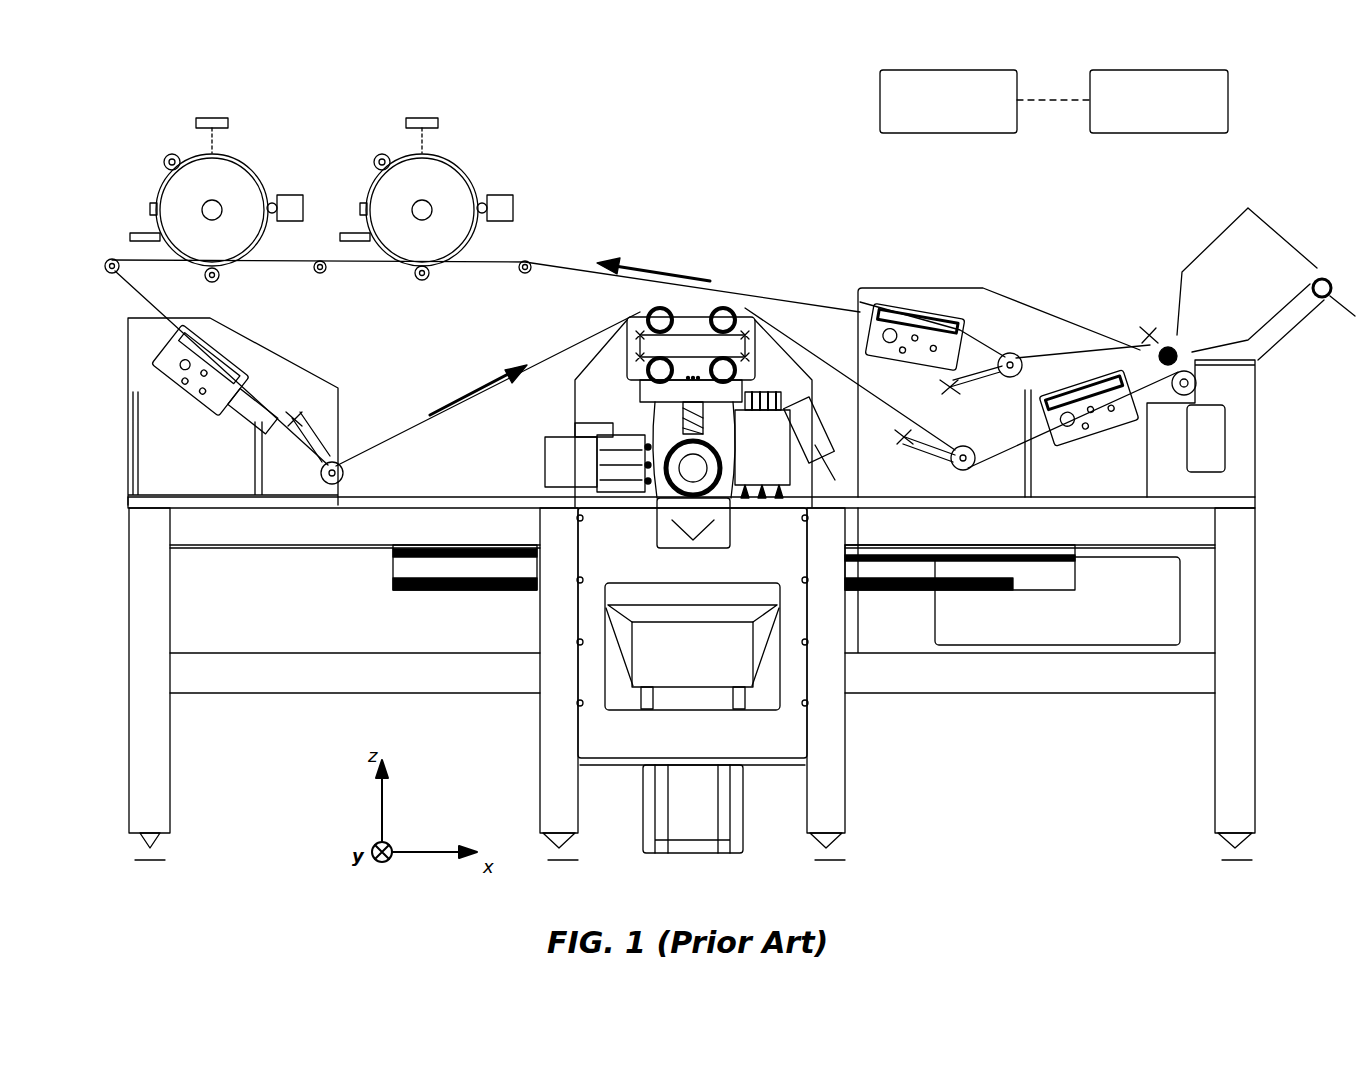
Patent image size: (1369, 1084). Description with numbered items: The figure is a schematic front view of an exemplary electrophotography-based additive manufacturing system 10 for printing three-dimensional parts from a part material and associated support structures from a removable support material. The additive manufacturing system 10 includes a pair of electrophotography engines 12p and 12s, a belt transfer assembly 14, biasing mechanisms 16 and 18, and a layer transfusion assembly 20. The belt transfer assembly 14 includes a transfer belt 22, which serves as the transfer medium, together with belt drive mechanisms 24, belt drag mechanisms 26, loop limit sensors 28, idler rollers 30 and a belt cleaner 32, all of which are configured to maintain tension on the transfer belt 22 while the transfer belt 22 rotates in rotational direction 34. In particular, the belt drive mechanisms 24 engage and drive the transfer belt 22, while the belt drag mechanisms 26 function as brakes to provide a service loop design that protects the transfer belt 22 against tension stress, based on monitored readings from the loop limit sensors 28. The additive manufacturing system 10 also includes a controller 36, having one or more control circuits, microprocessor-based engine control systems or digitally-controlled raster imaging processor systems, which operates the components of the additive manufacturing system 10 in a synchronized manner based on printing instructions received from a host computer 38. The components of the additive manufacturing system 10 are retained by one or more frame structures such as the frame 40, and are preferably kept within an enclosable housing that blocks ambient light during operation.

The additive manufacturing system 10 is at (150, 78).
The electrophotography engine 12p is at (240, 141).
The electrophotography engine 12s is at (478, 163).
The belt transfer assembly 14 is at (185, 418).
The biasing mechanism 16 is at (418, 282).
The biasing mechanism 18 is at (222, 282).
The layer transfusion assembly 20 is at (835, 190).
The transfer belt 22 is at (428, 432).
The belt drive mechanism 24 is at (220, 352).
The belt drag mechanism 26 is at (645, 318).
The loop limit sensor 28 is at (328, 483).
The idler roller 30 is at (106, 274).
The belt cleaner 32 is at (1215, 240).
The rotational direction 34 is at (635, 268).
The controller 36 is at (978, 133).
The host computer 38 is at (1205, 133).
The frame 40 is at (355, 683).